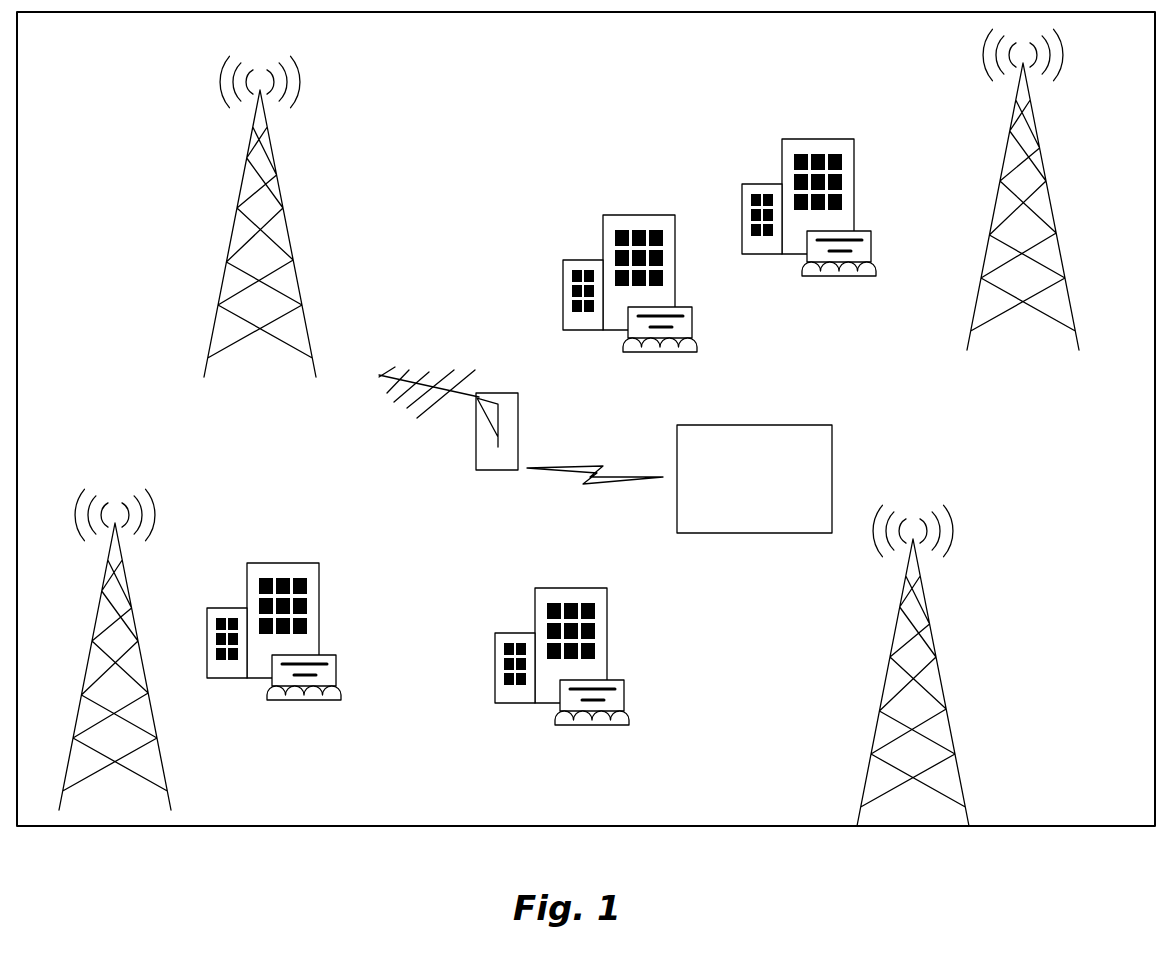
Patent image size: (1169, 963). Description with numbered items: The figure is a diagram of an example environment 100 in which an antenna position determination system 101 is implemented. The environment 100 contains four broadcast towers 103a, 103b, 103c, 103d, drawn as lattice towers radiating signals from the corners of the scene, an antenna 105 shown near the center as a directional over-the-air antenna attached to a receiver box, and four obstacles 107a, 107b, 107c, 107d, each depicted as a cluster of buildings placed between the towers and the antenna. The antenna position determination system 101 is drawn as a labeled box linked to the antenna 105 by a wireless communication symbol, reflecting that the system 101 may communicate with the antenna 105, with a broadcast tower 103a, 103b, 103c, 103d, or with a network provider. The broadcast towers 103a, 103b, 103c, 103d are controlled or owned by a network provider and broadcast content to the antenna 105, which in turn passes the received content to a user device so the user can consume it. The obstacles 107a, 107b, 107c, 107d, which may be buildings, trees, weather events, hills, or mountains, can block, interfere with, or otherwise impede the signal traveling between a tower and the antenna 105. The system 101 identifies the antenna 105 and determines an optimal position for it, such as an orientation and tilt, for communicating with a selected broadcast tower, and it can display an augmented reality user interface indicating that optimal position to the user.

The environment 100 is at (1080, 814).
The antenna position determination system 101 is at (777, 425).
The broadcast tower 103a is at (1045, 150).
The broadcast tower 103b is at (287, 217).
The broadcast tower 103c is at (945, 675).
The broadcast tower 103d is at (132, 603).
The antenna 105 is at (506, 372).
The obstacle 107a is at (648, 213).
The obstacle 107b is at (798, 148).
The obstacle 107c is at (322, 605).
The obstacle 107d is at (608, 656).